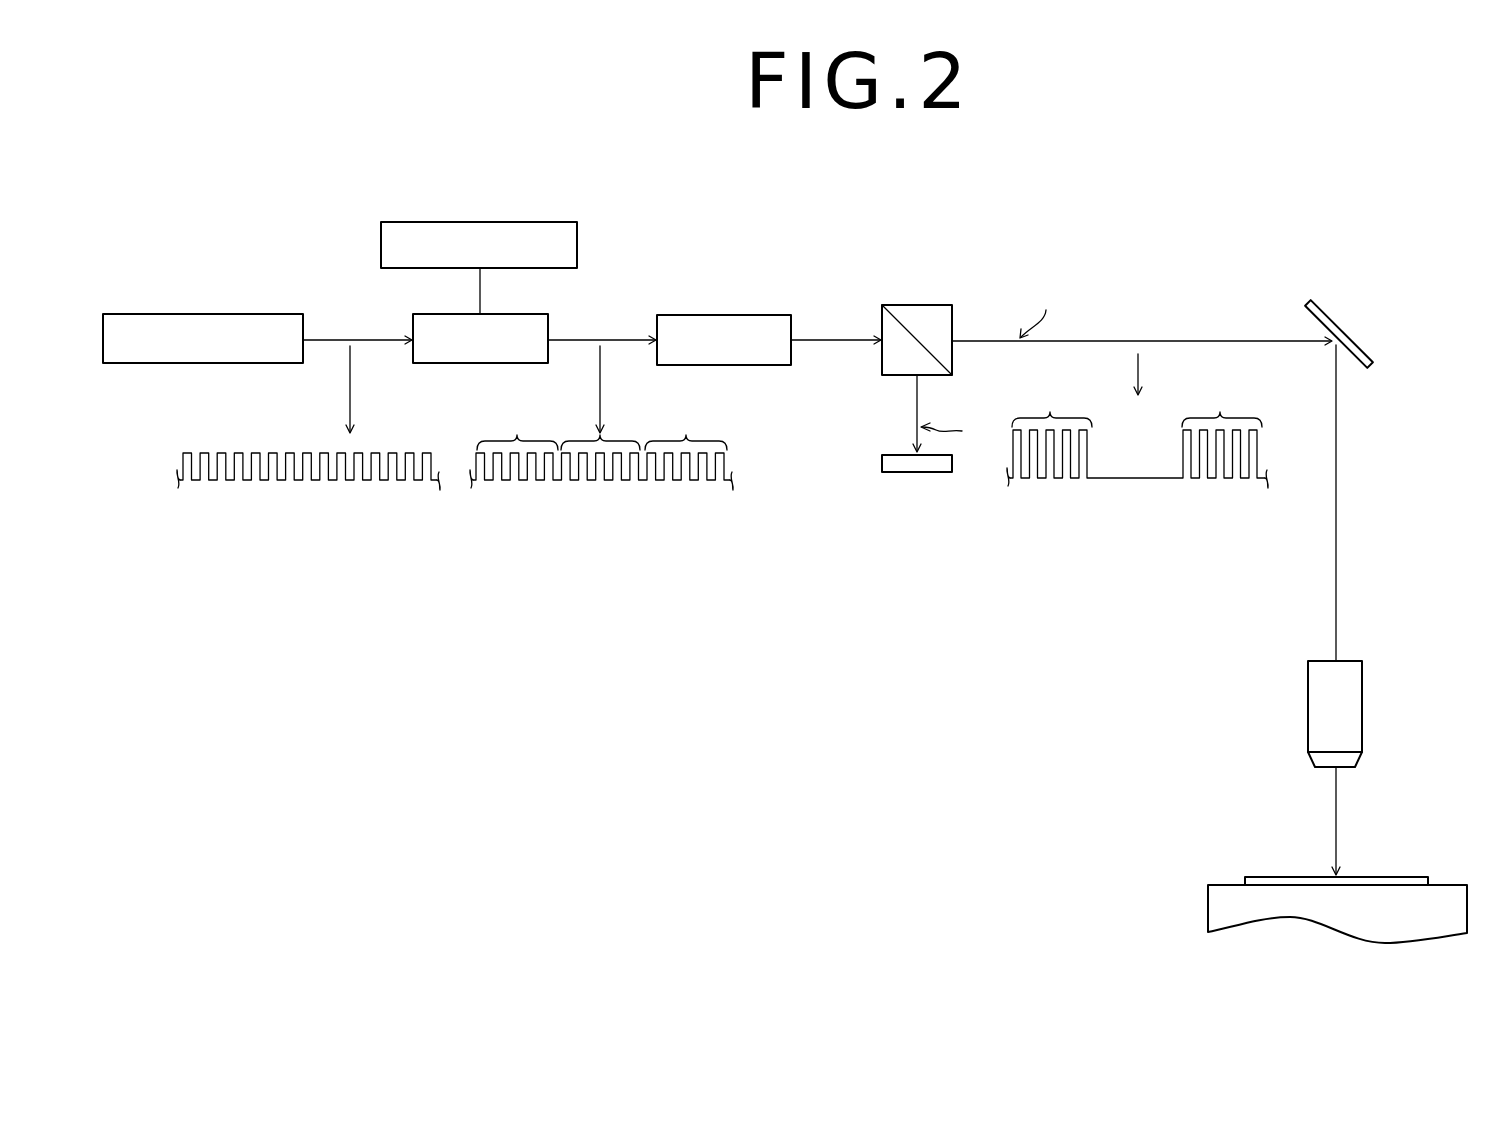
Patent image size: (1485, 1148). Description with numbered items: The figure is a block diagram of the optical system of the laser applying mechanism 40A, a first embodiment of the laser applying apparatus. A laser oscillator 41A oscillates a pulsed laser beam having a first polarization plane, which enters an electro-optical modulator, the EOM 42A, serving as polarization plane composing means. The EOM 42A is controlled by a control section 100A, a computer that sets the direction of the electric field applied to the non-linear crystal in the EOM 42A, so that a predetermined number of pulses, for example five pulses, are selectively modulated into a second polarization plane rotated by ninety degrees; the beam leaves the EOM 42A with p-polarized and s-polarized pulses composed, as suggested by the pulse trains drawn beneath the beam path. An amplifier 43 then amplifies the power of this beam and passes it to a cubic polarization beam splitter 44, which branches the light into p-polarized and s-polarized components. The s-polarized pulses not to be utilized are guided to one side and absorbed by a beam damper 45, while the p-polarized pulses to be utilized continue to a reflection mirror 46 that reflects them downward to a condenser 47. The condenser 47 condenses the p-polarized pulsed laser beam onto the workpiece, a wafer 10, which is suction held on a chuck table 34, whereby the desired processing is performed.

The laser applying mechanism 40A is at (284, 251).
The control section 100A is at (472, 222).
The laser oscillator 41A is at (217, 314).
The electro-optical modulator (EOM) 42A is at (436, 314).
The amplifier 43 is at (716, 315).
The polarization beam splitter 44 is at (930, 305).
The beam damper 45 is at (898, 455).
The reflection mirror 46 is at (1327, 313).
The condenser 47 is at (1343, 727).
The wafer 10 is at (1380, 876).
The chuck table 34 is at (1206, 913).